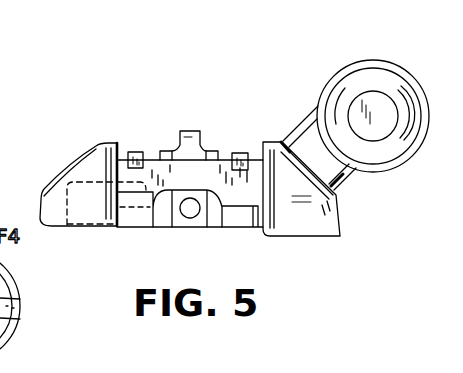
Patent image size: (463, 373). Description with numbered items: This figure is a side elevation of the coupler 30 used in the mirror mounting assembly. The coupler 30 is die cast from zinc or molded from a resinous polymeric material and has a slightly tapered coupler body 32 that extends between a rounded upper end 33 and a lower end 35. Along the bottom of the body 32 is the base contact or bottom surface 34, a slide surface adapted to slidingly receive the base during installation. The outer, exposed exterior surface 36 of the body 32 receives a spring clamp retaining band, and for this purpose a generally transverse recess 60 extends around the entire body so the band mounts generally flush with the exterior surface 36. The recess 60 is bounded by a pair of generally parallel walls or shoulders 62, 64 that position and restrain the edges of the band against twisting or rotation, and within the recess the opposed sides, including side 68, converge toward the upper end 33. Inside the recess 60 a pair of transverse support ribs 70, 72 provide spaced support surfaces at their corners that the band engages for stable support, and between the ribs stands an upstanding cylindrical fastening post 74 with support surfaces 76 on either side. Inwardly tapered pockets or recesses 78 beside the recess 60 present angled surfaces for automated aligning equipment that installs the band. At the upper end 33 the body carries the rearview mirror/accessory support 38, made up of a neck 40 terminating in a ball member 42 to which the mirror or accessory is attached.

The coupler 30 is at (100, 115).
The coupler body 32 is at (97, 142).
The upper end 33 is at (341, 236).
The base contact or bottom surface 34 is at (243, 230).
The lower end 35 is at (40, 220).
The exterior surface 36 is at (83, 168).
The rearview mirror/accessory support 38 is at (318, 90).
The neck 40 is at (333, 177).
The ball member 42 is at (383, 61).
The transverse recess 60 is at (238, 110).
The wall or shoulder 62 is at (302, 137).
The wall or shoulder 64 is at (118, 160).
The side 68 is at (228, 220).
The support rib 70 is at (245, 153).
The support rib 72 is at (137, 152).
The fastening post 74 is at (188, 131).
The support surfaces 76 is at (168, 149).
The tapered pockets or recesses 78 is at (198, 195).